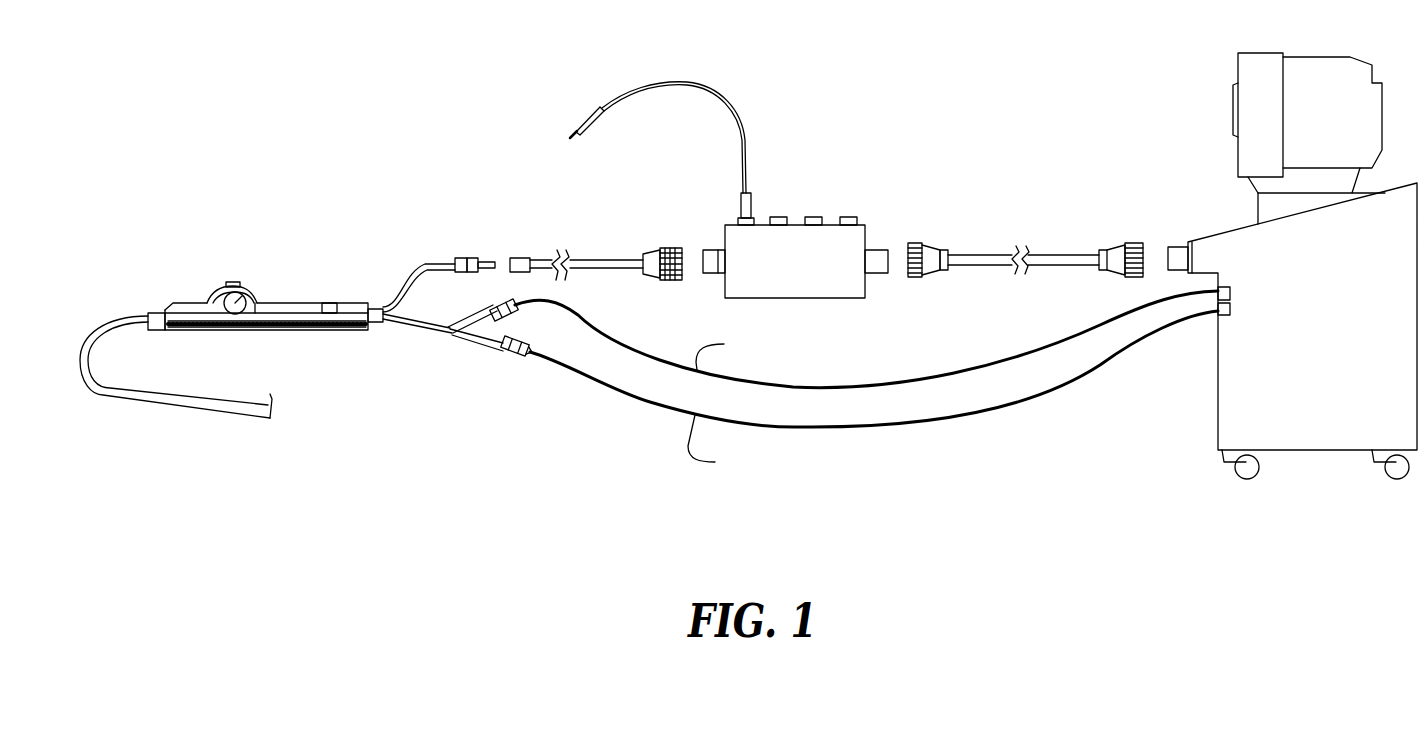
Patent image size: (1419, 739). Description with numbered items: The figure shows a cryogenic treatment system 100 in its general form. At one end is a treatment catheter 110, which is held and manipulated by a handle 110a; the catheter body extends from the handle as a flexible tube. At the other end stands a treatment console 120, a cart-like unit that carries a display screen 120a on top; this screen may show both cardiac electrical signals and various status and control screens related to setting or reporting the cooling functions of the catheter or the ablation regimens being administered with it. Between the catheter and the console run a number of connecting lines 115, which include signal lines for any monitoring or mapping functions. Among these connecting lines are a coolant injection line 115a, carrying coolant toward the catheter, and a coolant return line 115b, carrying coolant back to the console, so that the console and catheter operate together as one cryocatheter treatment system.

The cryogenic treatment system 100 is at (863, 68).
The treatment catheter 110 is at (140, 280).
The handle 110a is at (312, 301).
The connecting lines 115 is at (1022, 138).
The coolant injection line 115a is at (882, 428).
The coolant return line 115b is at (897, 378).
The treatment console 120 is at (1208, 178).
The display screen 120a is at (1238, 83).